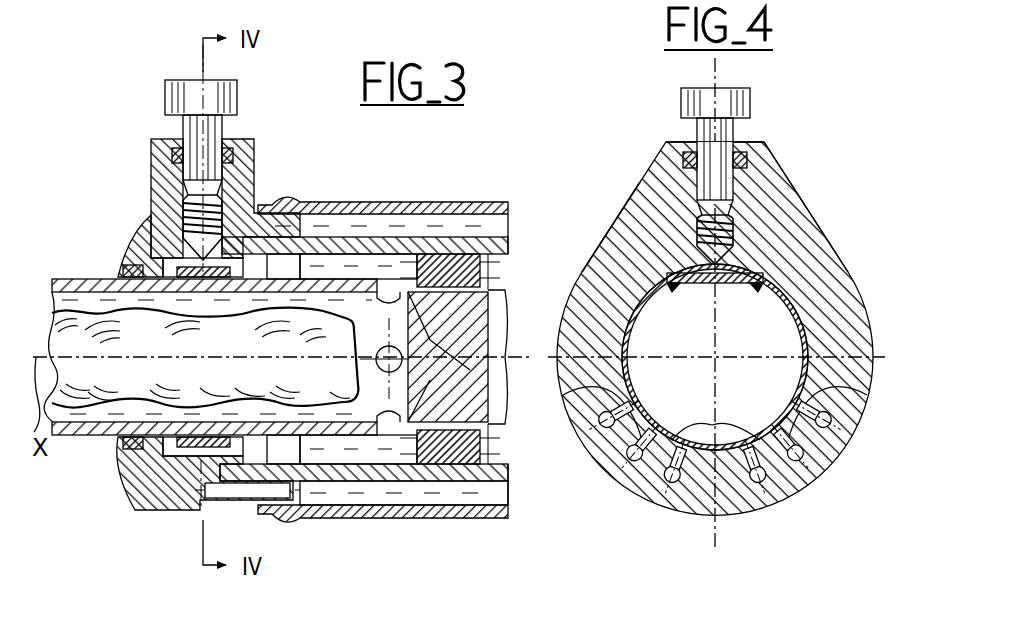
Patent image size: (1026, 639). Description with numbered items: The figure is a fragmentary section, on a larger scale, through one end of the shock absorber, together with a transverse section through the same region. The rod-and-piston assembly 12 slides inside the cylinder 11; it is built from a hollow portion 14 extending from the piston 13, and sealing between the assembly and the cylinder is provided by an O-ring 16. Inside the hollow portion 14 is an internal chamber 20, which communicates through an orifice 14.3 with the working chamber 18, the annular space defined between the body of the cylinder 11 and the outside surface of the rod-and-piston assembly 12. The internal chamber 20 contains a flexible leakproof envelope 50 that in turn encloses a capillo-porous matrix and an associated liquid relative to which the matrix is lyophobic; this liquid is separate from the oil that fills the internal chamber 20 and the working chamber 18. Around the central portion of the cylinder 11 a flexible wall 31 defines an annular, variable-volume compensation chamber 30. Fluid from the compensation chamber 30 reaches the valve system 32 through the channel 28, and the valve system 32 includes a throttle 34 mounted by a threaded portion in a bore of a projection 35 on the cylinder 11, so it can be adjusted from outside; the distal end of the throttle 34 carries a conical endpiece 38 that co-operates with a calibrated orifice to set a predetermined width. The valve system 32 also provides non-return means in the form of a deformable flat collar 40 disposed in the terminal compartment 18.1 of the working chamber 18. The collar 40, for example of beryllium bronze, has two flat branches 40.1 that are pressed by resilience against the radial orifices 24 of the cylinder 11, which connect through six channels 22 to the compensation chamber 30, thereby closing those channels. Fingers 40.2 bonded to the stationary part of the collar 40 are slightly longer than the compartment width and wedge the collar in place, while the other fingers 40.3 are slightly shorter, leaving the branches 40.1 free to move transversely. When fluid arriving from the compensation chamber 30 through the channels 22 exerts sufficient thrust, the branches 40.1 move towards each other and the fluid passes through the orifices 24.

In FIG. 3, the cylinder 11 is at (498, 237).
In FIG. 4, the cylinder 11 is at (833, 265).
In FIG. 3, the rod-and-piston assembly 12 is at (67, 272).
In FIG. 3, the piston 13 is at (450, 255).
In FIG. 3, the hollow portion 14 is at (70, 438).
In FIG. 3, the orifice 14.3 is at (390, 290).
In FIG. 3, the O-ring 16 is at (135, 478).
In FIG. 3, the working chamber 18 is at (315, 265).
In FIG. 3, the terminal compartment 18.1 is at (140, 268).
In FIG. 4, the terminal compartment 18.1 is at (607, 226).
In FIG. 3, the internal chamber 20 is at (372, 400).
In FIG. 3, the channels 22 is at (222, 500).
In FIG. 4, the channels 22 is at (650, 470).
In FIG. 3, the radial orifices 24 is at (201, 470).
In FIG. 4, the radial orifices 24 is at (588, 393).
In FIG. 3, the channel 28 is at (255, 198).
In FIG. 3, the compensation chamber 30 is at (440, 492).
In FIG. 3, the flexible wall 31 is at (395, 518).
In FIG. 3, the valve system 32 is at (199, 158).
In FIG. 4, the valve system 32 is at (739, 163).
In FIG. 3, the throttle 34 is at (236, 100).
In FIG. 4, the throttle 34 is at (683, 108).
In FIG. 3, the projection 35 is at (150, 160).
In FIG. 4, the projection 35 is at (782, 196).
In FIG. 3, the conical endpiece 38 is at (165, 205).
In FIG. 4, the conical endpiece 38 is at (715, 160).
In FIG. 3, the deformable flat collar 40 is at (168, 460).
In FIG. 4, the deformable flat collar 40 is at (715, 357).
In FIG. 4, the branches 40.1 is at (800, 362).
In FIG. 4, the fingers 40.2 is at (722, 284).
In FIG. 4, the fingers 40.3 is at (740, 405).
In FIG. 3, the flexible leakproof envelope 50 is at (96, 375).